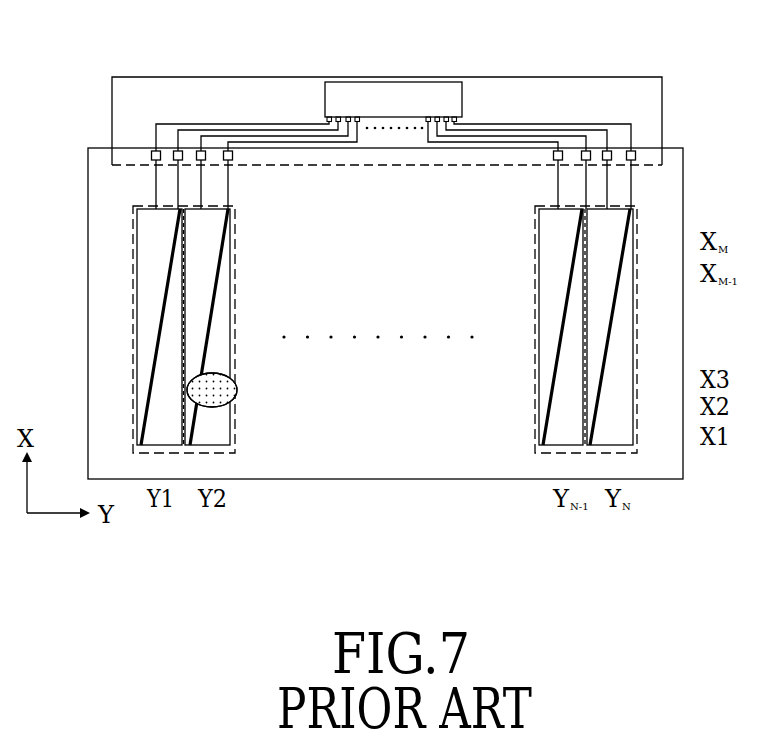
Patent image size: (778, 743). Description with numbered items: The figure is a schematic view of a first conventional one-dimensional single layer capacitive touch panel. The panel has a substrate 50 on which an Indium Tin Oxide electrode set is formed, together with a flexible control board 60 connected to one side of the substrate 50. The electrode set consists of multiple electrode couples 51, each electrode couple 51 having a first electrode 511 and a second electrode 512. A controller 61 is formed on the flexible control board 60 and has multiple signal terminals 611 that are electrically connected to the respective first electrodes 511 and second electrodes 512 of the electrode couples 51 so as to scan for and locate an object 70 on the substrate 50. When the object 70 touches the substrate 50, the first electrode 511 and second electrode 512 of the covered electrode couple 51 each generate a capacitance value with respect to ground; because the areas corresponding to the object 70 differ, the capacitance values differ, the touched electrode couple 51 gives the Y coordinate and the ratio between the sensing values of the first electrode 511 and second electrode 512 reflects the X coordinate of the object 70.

The substrate 50 is at (672, 195).
The flexible control board 60 is at (655, 102).
The controller 61 is at (412, 92).
The signal terminal 611 is at (340, 117).
The electrode couple 51 is at (133, 298).
The first electrode 511 is at (148, 233).
The second electrode 512 is at (222, 292).
The object 70 is at (230, 392).